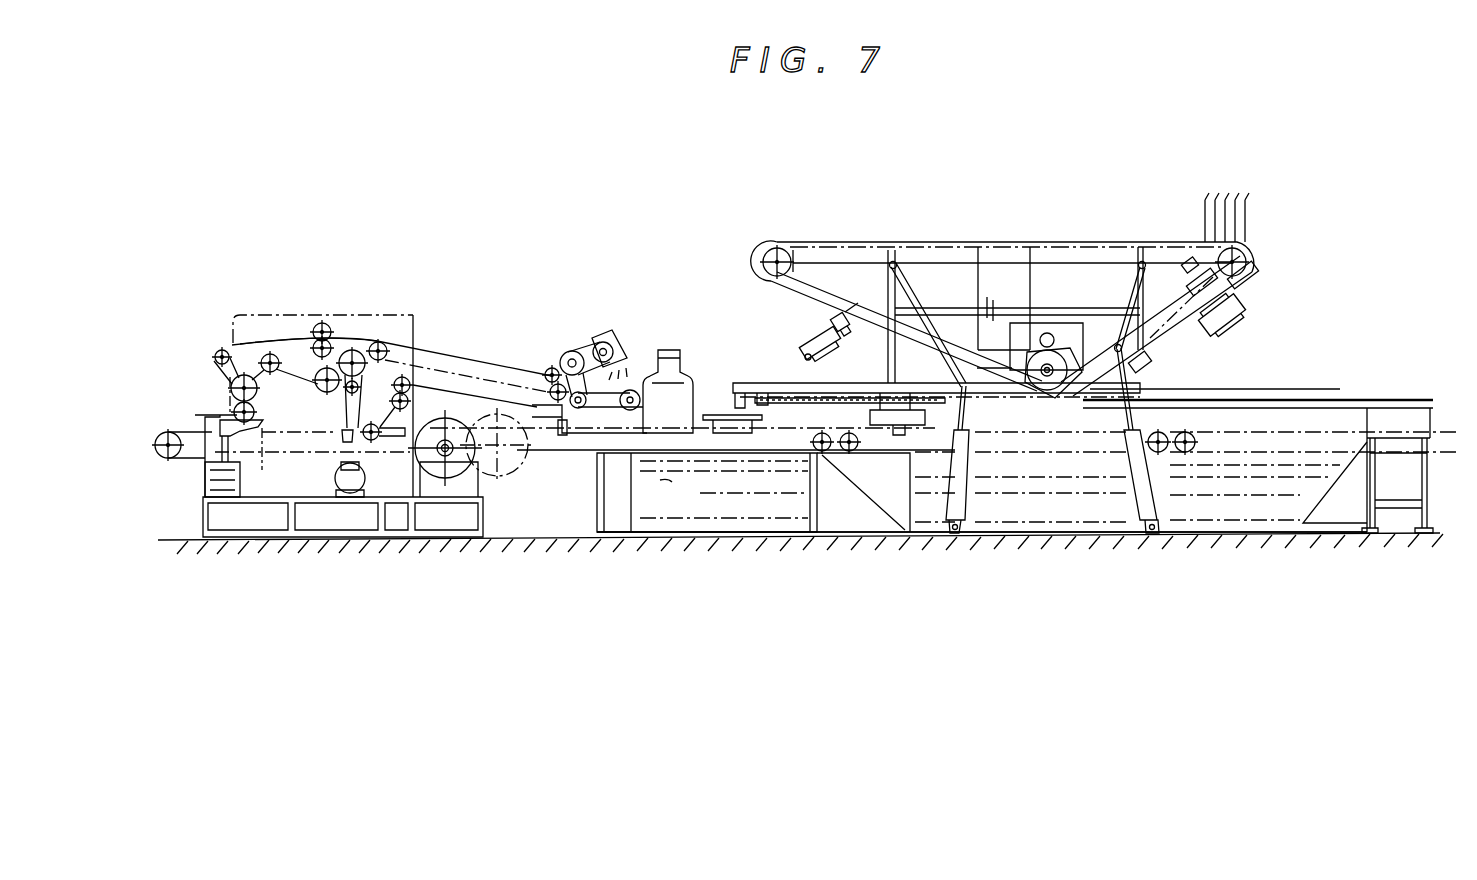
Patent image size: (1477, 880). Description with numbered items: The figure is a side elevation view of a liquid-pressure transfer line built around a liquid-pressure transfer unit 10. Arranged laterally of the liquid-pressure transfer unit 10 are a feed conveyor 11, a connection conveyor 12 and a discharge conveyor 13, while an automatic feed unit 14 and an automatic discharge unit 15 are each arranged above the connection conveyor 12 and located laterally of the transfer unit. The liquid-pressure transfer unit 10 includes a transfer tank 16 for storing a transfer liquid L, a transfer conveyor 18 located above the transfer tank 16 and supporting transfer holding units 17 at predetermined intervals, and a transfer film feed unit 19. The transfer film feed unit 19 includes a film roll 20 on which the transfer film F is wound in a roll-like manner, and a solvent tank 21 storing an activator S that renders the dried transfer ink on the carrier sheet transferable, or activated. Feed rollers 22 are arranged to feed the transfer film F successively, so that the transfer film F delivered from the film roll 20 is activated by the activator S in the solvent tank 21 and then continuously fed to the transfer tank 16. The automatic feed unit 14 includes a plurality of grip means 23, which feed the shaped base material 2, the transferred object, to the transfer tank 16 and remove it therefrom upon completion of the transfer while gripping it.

The shaped base material 2 is at (803, 360).
The liquid-pressure transfer unit 10 is at (1357, 565).
The feed conveyor 11 is at (298, 468).
The connection conveyor 12 is at (1023, 478).
The discharge conveyor 13 is at (1232, 448).
The automatic feed unit 14 is at (882, 386).
The automatic discharge unit 15 is at (1318, 303).
The transfer tank 16 is at (600, 480).
The transfer holding units 17 is at (1240, 312).
The transfer conveyor 18 is at (1180, 205).
The transfer film feed unit 19 is at (407, 300).
The film roll 20 is at (458, 468).
The solvent tank 21 is at (212, 481).
The feed rollers 22 is at (218, 350).
The grip means 23 is at (908, 425).
The transfer film F is at (424, 404).
The activator S is at (244, 477).
The transfer liquid L is at (726, 512).